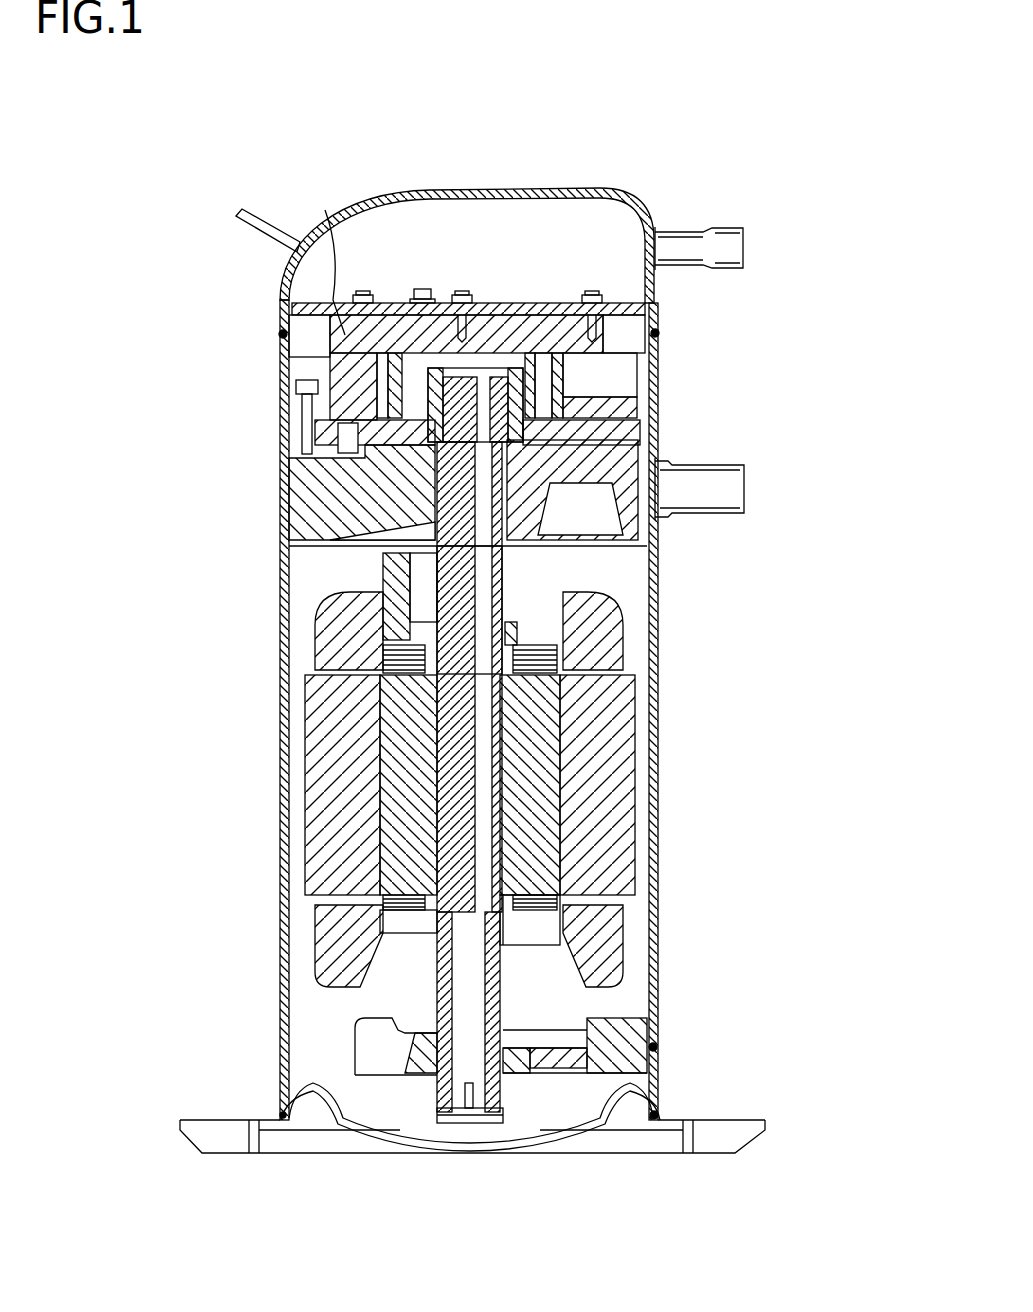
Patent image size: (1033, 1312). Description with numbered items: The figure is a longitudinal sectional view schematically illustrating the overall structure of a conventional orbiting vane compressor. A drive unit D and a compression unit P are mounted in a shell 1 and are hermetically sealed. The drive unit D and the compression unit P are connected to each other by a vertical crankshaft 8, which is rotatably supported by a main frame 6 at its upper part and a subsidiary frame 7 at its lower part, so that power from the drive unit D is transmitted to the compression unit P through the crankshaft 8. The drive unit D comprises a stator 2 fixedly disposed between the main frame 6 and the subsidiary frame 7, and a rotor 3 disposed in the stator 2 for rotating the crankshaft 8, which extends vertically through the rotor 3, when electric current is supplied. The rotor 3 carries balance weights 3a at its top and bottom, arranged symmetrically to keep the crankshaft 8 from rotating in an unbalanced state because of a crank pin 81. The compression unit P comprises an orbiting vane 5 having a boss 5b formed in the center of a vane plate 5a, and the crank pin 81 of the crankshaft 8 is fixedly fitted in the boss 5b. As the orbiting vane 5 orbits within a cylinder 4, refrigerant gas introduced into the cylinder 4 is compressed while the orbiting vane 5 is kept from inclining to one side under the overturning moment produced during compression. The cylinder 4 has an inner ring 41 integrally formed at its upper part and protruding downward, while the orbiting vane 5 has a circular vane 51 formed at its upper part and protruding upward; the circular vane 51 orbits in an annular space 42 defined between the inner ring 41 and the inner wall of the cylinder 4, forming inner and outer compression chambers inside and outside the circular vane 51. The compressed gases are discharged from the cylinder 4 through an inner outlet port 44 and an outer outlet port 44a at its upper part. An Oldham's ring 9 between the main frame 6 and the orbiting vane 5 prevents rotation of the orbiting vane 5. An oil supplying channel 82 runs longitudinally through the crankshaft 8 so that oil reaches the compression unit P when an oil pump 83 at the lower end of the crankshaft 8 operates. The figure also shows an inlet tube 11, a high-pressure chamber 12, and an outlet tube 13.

The shell 1 is at (278, 781).
The stator 2 is at (656, 878).
The rotor 3 is at (380, 898).
The balance weights 3a is at (325, 606).
The cylinder 4 is at (446, 266).
The inner ring 41 is at (340, 428).
The annular space 42 is at (279, 334).
The inner outlet port 44 is at (418, 330).
The outer outlet port 44a is at (365, 338).
The orbiting vane 5 is at (578, 385).
The vane plate 5a is at (585, 415).
The boss 5b is at (657, 311).
The circular vane 51 is at (663, 350).
The main frame 6 is at (305, 512).
The subsidiary frame 7 is at (650, 1028).
The crankshaft 8 is at (445, 792).
The crank pin 81 is at (345, 440).
The oil supplying channel 82 is at (485, 578).
The oil pump 83 is at (462, 1123).
The Oldham's ring 9 is at (648, 462).
The inlet tube 11 is at (730, 497).
The high-pressure chamber 12 is at (575, 213).
The outlet tube 13 is at (727, 243).
The compression unit P is at (348, 384).
The drive unit D is at (640, 735).